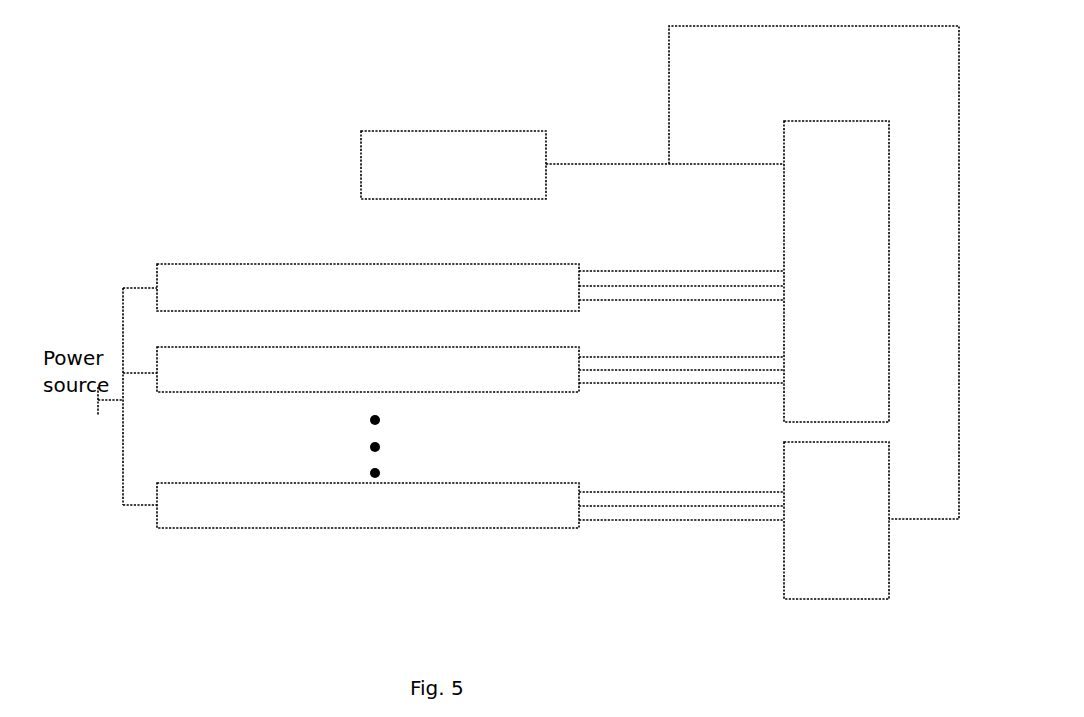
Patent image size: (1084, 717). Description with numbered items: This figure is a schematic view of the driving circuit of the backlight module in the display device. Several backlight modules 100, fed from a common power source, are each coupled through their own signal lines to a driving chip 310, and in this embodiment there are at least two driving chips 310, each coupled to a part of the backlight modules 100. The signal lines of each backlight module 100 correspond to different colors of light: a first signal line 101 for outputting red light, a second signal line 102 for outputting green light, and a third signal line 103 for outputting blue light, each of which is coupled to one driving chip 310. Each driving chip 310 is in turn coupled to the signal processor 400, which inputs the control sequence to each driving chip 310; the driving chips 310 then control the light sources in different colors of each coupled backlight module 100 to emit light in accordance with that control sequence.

The backlight module 100 is at (214, 275).
The first signal line 101 is at (600, 268).
The second signal line 102 is at (651, 283).
The third signal line 103 is at (716, 297).
The driving chip 310 is at (862, 137).
The signal processor 400 is at (486, 140).